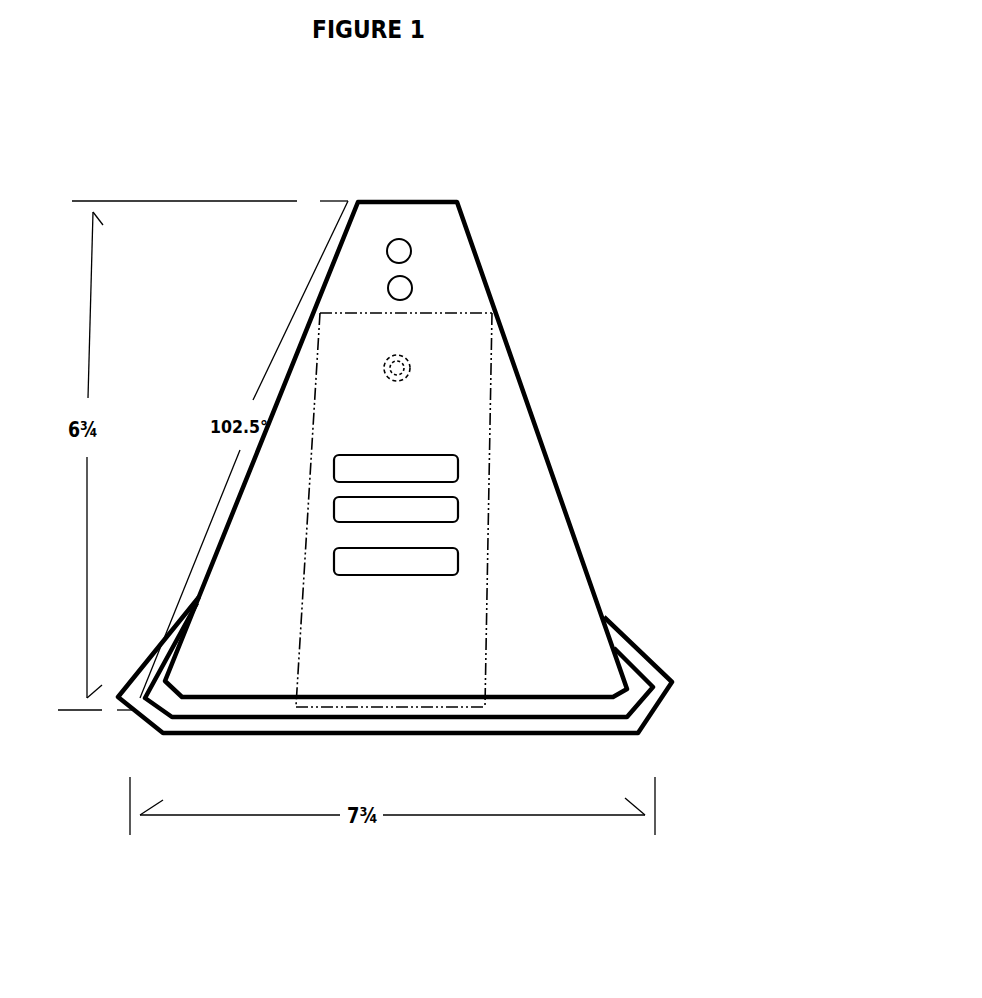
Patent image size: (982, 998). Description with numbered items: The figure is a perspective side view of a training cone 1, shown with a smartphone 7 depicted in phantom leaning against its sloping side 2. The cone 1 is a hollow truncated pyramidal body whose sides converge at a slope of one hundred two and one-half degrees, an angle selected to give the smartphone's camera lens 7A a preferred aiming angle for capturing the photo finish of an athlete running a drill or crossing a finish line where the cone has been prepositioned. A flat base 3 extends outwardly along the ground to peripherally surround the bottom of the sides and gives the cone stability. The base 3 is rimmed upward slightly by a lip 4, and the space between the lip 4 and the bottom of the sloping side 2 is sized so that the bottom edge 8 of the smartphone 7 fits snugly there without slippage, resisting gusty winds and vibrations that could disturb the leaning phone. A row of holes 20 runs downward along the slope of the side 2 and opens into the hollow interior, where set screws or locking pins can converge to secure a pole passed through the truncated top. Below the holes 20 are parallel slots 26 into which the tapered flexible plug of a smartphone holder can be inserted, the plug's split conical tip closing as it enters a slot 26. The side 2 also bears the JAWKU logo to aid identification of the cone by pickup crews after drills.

The cone 1 is at (465, 467).
The side 2 is at (517, 588).
The base 3 is at (605, 710).
The lip 4 is at (637, 716).
The smartphone 7 is at (517, 505).
The camera lens 7A is at (410, 365).
The bottom edge 8 is at (395, 707).
The holes 20 is at (397, 288).
The slots 26 is at (334, 468).